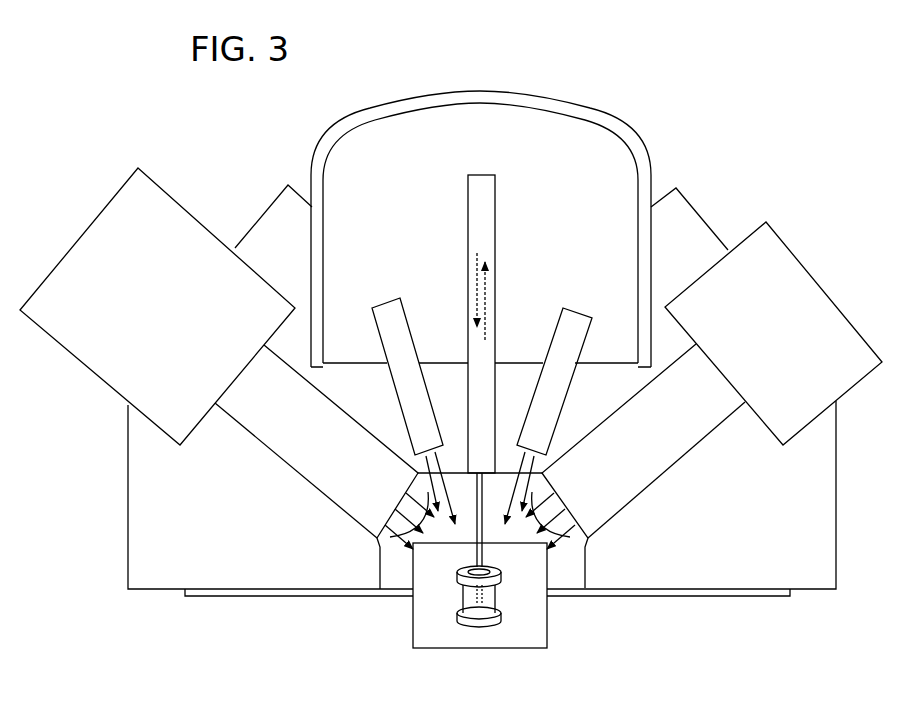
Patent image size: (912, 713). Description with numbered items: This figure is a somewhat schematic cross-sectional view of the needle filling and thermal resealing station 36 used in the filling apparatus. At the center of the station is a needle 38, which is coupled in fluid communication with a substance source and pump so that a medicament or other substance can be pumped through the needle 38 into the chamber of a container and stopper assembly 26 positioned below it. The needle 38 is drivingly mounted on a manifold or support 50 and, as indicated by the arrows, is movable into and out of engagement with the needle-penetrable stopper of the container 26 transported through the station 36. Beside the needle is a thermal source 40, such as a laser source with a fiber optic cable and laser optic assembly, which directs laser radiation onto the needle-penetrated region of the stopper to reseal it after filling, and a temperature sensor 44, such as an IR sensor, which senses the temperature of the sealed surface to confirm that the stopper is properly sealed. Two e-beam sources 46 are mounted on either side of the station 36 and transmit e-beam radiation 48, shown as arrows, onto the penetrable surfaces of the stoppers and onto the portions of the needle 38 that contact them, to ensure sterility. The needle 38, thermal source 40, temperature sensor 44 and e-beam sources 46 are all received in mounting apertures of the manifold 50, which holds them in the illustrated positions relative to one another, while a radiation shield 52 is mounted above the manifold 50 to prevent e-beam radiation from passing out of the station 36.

The container and stopper assembly 26 is at (453, 608).
The needle filling and thermal resealing station 36 is at (751, 140).
The needle 38 is at (471, 502).
The thermal source 40 is at (583, 313).
The temperature sensor 44 is at (383, 303).
The e-beam source 46 is at (90, 223).
The e-beam radiation 48 is at (390, 540).
The manifold or support 50 is at (127, 494).
The radiation shield 52 is at (601, 116).